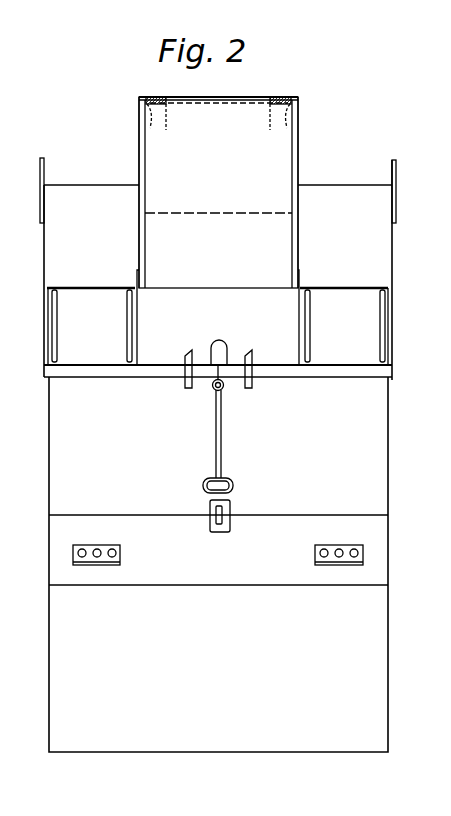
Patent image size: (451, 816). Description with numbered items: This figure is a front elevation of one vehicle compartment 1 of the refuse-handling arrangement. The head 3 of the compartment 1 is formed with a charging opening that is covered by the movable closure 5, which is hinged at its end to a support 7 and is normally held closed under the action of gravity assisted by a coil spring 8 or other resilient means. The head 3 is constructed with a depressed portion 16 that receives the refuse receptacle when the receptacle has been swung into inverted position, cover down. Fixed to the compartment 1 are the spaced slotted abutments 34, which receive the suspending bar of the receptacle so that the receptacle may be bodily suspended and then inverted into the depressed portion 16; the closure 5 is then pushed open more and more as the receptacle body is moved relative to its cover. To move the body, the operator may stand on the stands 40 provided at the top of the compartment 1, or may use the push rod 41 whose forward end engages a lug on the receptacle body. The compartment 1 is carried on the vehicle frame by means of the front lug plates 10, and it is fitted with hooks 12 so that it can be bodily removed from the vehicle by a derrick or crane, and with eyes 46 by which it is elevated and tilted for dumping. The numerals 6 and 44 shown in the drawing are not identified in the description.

The vehicle compartment 1 is at (218, 564).
The head 3 is at (218, 270).
The movable closure 5 is at (218, 192).
The top rim 6 is at (139, 100).
The support 7 is at (139, 134).
The coil spring 8 is at (152, 98).
The front lug plates 10 is at (218, 547).
The hooks 12 is at (40, 165).
The depressed portion 16 is at (218, 325).
The slotted abutments 34 is at (245, 372).
The stands 40 is at (98, 280).
The push rod 41 is at (222, 433).
The partition line 44 is at (147, 222).
The eyes 46 is at (226, 510).